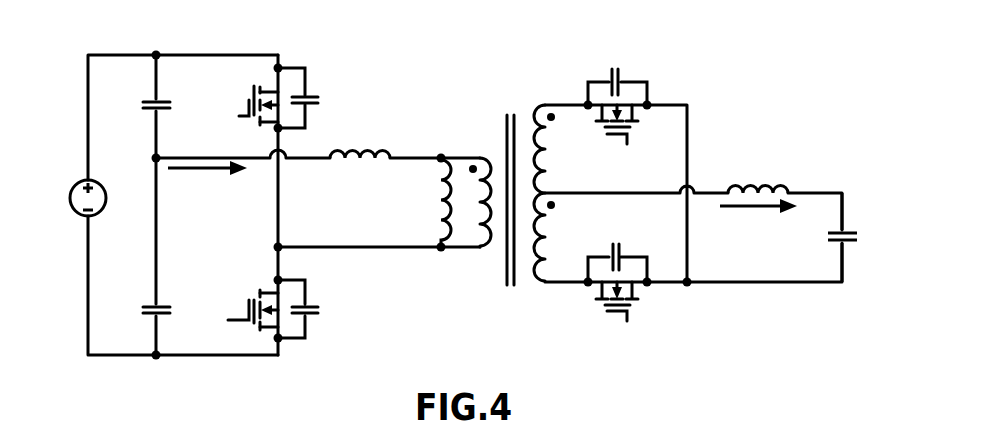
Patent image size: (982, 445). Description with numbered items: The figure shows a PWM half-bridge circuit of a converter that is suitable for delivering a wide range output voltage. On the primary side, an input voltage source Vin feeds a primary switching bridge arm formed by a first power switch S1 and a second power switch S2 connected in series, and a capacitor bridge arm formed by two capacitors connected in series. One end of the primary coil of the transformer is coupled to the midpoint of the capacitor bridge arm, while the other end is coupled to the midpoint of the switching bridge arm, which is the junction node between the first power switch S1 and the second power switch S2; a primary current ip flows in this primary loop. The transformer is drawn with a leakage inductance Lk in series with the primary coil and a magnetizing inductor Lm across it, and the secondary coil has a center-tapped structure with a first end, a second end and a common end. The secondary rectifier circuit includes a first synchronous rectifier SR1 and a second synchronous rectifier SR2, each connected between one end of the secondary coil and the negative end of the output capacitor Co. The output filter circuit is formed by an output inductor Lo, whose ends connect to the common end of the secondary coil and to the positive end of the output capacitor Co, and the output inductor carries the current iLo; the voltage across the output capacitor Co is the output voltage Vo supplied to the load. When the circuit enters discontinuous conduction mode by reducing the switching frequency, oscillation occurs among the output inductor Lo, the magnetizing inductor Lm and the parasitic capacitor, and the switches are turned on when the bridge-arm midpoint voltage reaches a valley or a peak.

The input voltage Vin is at (72, 198).
The primary current ip is at (207, 177).
The second power switch S2 is at (294, 98).
The first power switch S1 is at (289, 309).
The leakage inductance Lk is at (361, 169).
The magnetizing inductor Lm is at (430, 202).
The second synchronous rectifier SR2 is at (617, 91).
The first synchronous rectifier SR1 is at (617, 299).
The output inductor Lo is at (758, 174).
The output inductor current iLo is at (758, 217).
The output capacitor Co is at (829, 240).
The output voltage Vo is at (865, 237).